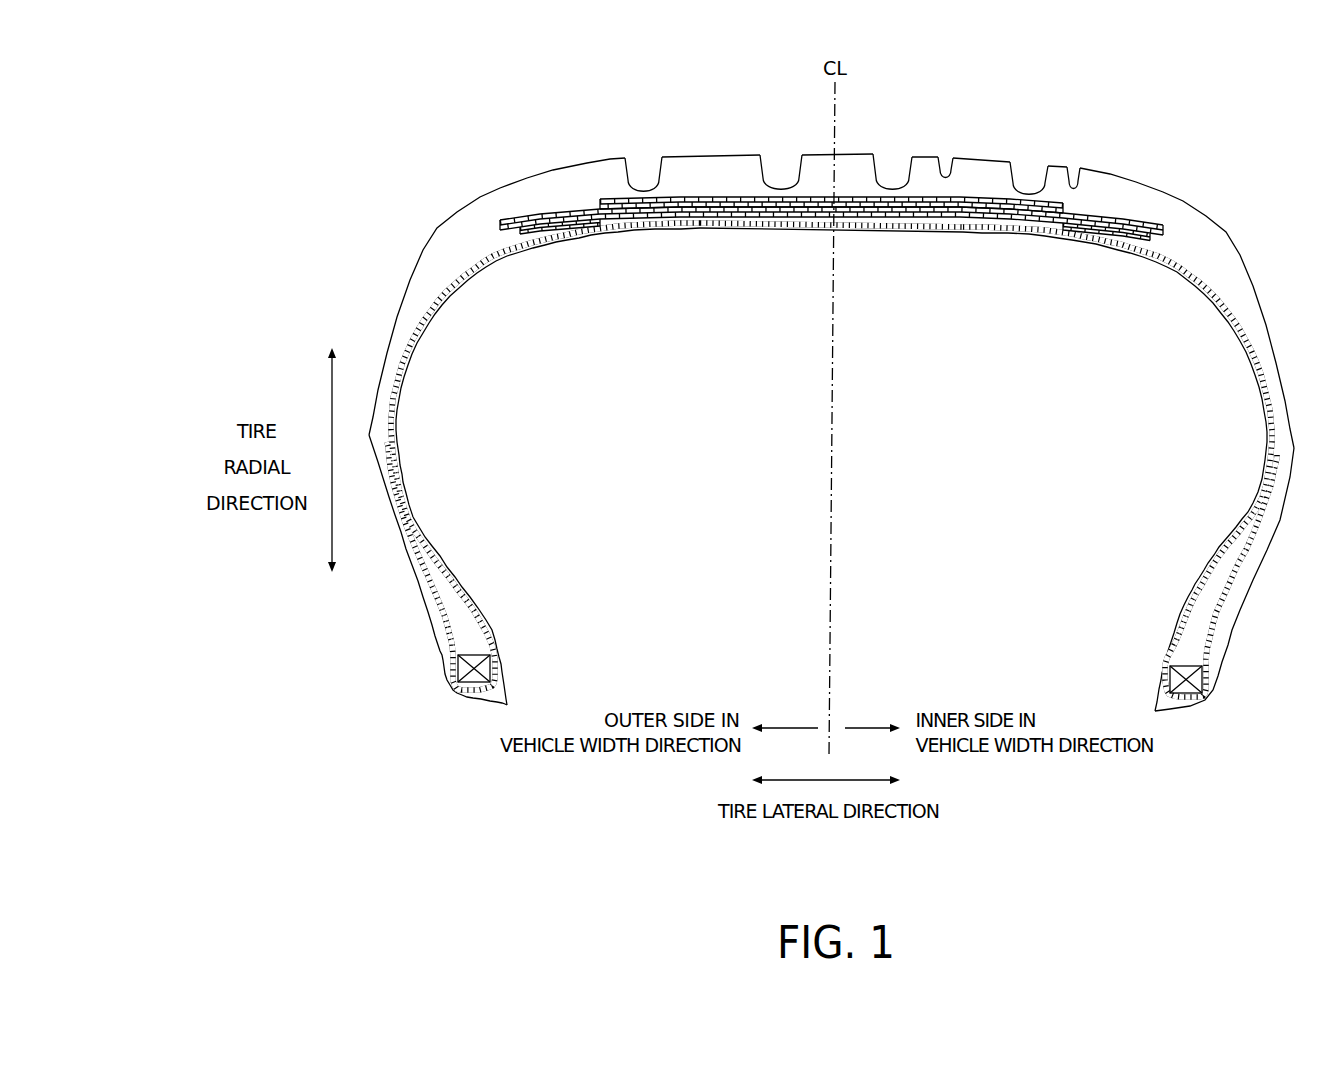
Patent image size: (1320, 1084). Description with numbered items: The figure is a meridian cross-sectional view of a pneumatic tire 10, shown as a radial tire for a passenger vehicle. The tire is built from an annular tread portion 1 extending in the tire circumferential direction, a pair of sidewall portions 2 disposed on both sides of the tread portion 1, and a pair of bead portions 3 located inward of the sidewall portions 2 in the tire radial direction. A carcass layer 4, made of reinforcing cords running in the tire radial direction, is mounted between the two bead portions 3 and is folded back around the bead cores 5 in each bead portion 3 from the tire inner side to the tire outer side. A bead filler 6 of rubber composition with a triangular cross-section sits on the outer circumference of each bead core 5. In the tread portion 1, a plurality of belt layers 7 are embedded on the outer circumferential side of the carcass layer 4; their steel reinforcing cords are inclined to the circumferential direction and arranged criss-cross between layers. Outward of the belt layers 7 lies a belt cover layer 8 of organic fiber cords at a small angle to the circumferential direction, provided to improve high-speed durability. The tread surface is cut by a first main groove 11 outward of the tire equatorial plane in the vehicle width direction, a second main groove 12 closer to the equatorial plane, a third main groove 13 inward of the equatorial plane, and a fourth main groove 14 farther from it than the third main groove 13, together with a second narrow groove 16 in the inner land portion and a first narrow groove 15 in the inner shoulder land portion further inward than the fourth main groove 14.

The tread portion 1 is at (993, 152).
The sidewall portion 2 is at (420, 255).
The bead portion 3 is at (435, 652).
The carcass layer 4 is at (1225, 312).
The bead core 5 is at (487, 671).
The bead filler 6 is at (470, 625).
The belt layer 7 is at (1092, 228).
The belt cover layer 8 is at (1140, 224).
The pneumatic tire 10 is at (537, 96).
The first main groove 11 is at (644, 185).
The second main groove 12 is at (788, 180).
The third main groove 13 is at (906, 180).
The fourth main groove 14 is at (1040, 182).
The first narrow groove 15 is at (1074, 180).
The second narrow groove 16 is at (947, 172).